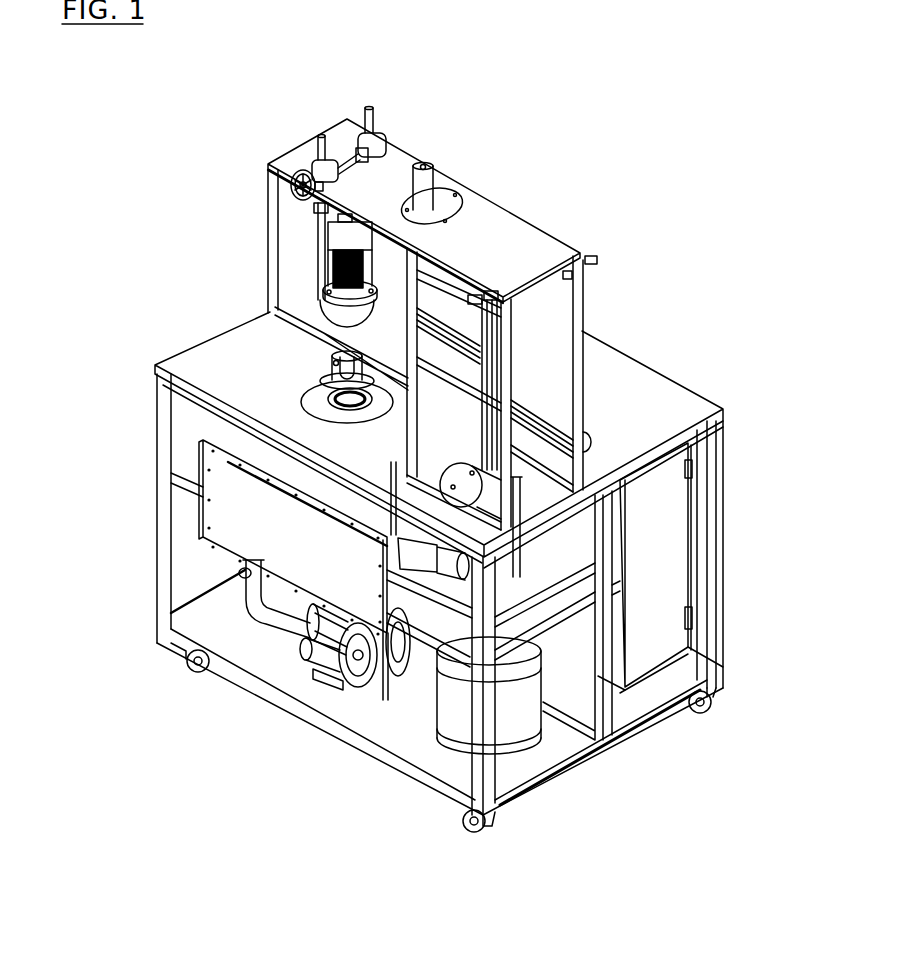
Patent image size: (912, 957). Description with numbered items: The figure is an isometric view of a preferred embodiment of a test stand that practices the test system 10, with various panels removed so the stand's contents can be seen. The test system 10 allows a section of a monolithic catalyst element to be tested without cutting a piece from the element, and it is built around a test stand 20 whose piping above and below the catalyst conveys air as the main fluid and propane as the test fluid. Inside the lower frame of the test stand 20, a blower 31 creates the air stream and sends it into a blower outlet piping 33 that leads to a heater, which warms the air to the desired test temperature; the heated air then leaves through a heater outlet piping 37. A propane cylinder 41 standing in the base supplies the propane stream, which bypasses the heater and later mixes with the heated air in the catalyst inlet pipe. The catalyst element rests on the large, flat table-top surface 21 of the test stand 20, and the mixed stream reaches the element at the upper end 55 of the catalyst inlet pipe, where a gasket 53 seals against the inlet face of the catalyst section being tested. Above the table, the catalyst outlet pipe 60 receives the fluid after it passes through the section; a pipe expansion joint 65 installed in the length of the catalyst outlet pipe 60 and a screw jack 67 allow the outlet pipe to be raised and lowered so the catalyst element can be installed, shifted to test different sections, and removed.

The test system 10 is at (490, 178).
The test stand 20 is at (697, 390).
The flat surface 21 is at (212, 363).
The blower 31 is at (327, 680).
The blower outlet piping 33 is at (275, 625).
The heater outlet piping 37 is at (447, 560).
The propane cylinder 41 is at (460, 703).
The gasket 53 is at (323, 403).
The upper end 55 is at (327, 402).
The catalyst outlet pipe 60 is at (332, 374).
The pipe expansion joint 65 is at (332, 263).
The screw jack 67 is at (291, 196).